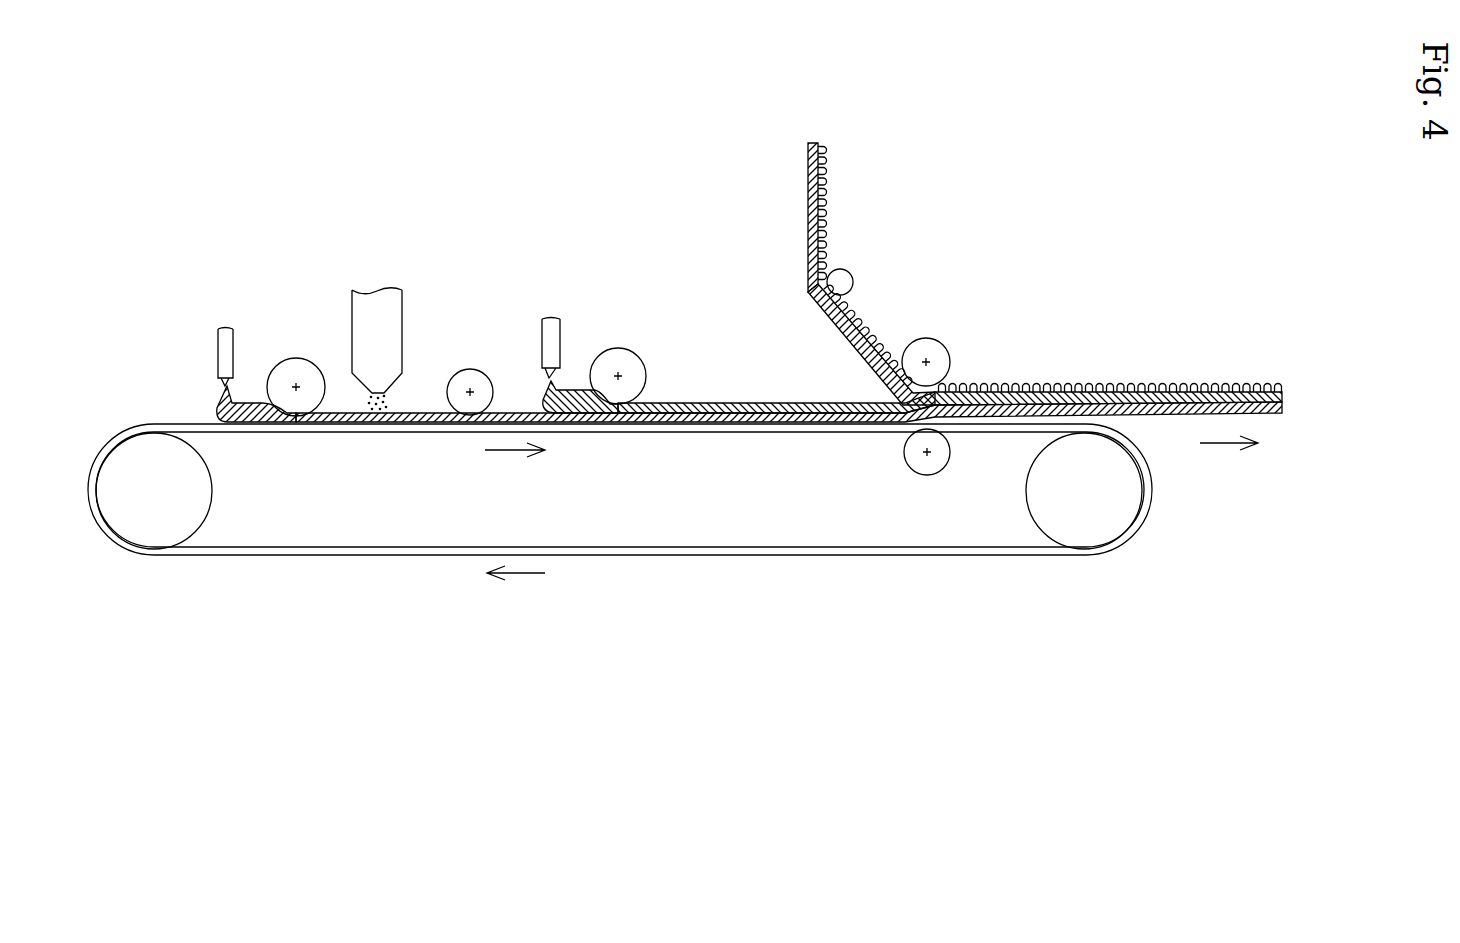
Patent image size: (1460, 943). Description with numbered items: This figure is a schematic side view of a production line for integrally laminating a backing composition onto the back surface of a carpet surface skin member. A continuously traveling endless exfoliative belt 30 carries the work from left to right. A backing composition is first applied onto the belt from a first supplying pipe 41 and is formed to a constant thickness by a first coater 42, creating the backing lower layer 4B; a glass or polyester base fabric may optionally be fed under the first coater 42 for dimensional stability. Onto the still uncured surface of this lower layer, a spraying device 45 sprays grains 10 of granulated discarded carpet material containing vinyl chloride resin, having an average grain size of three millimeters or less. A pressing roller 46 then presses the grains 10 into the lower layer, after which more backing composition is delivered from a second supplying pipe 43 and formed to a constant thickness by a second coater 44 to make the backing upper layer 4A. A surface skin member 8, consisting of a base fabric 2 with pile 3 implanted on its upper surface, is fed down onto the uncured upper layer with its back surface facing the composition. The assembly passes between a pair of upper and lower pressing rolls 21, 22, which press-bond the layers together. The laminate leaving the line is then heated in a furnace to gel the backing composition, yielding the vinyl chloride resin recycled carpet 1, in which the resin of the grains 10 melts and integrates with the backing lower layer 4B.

The vinyl chloride resin recycled carpet 1 is at (1276, 361).
The base fabric 2 is at (818, 144).
The pile 3 is at (822, 181).
The backing upper layer 4A is at (1277, 404).
The backing lower layer 4B is at (1277, 418).
The surface skin member 8 is at (885, 102).
The grains 10 is at (400, 408).
The upper pressing roll 21 is at (932, 348).
The lower pressing roll 22 is at (930, 466).
The endless exfoliative belt 30 is at (1000, 549).
The first supplying pipe 41 is at (225, 327).
The first coater 42 is at (293, 368).
The second coating nozzle 43 is at (548, 320).
The second coater 44 is at (622, 356).
The spraying device 45 is at (378, 302).
The pressing roller 46 is at (478, 373).